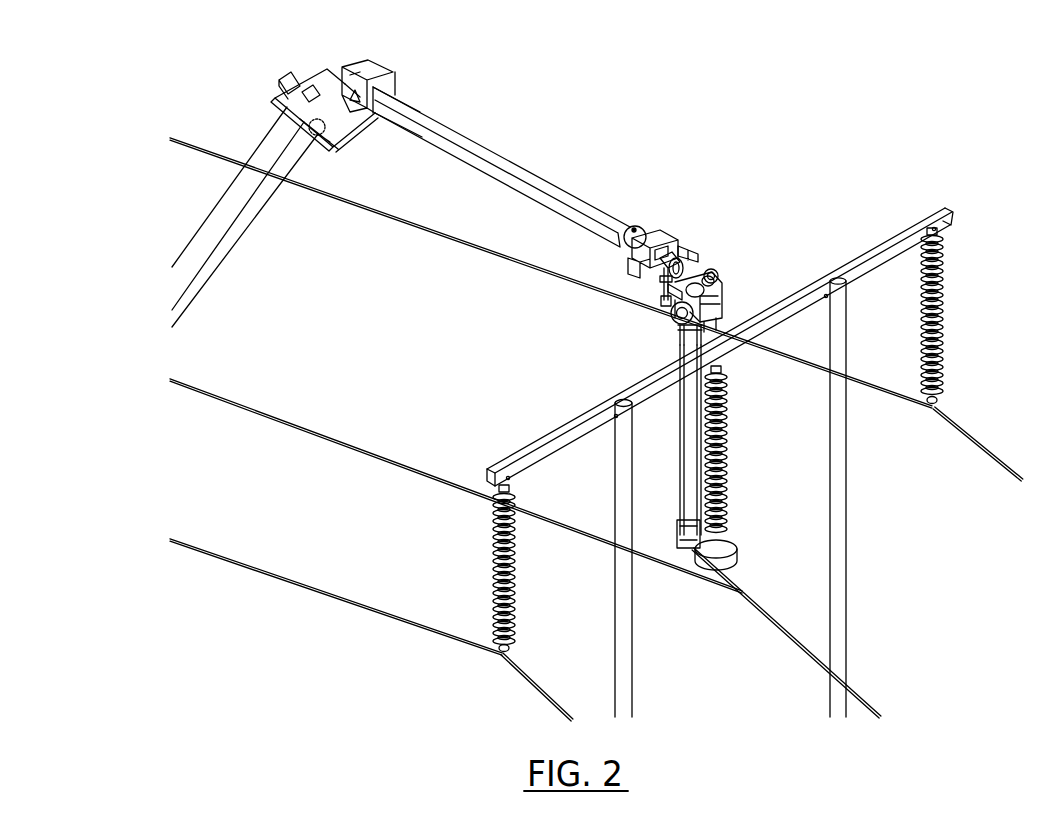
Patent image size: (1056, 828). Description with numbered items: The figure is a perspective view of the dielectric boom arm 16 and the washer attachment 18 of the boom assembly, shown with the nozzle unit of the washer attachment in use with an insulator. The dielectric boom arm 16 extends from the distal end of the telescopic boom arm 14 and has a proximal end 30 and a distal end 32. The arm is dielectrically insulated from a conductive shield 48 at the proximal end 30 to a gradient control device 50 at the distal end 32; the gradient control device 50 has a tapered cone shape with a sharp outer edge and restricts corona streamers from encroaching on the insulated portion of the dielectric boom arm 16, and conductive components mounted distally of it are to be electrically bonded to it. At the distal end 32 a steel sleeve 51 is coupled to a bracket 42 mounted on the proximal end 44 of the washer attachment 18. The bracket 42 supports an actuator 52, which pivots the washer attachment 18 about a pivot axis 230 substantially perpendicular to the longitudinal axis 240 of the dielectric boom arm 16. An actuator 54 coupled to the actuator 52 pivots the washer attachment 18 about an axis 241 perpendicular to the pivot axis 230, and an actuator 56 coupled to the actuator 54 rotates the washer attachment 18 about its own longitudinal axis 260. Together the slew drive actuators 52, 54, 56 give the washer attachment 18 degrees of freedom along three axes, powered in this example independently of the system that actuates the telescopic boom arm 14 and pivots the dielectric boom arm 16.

The telescopic boom arm 14 is at (232, 205).
The dielectric boom arm 16 is at (512, 163).
The washer attachment 18 is at (683, 463).
The proximal end 30 is at (402, 100).
The distal end 32 is at (613, 220).
The bracket 42 is at (655, 255).
The proximal end 44 is at (687, 333).
The conductive shield 48 is at (387, 77).
The gradient control device 50 is at (645, 230).
The sleeve 51 is at (630, 247).
The actuator 52 is at (663, 277).
The actuator 54 is at (677, 290).
The actuator 56 is at (697, 278).
The pivot axis 230 is at (692, 248).
The longitudinal axis 240 is at (353, 73).
The axis 241 is at (748, 315).
The longitudinal axis 260 is at (683, 552).